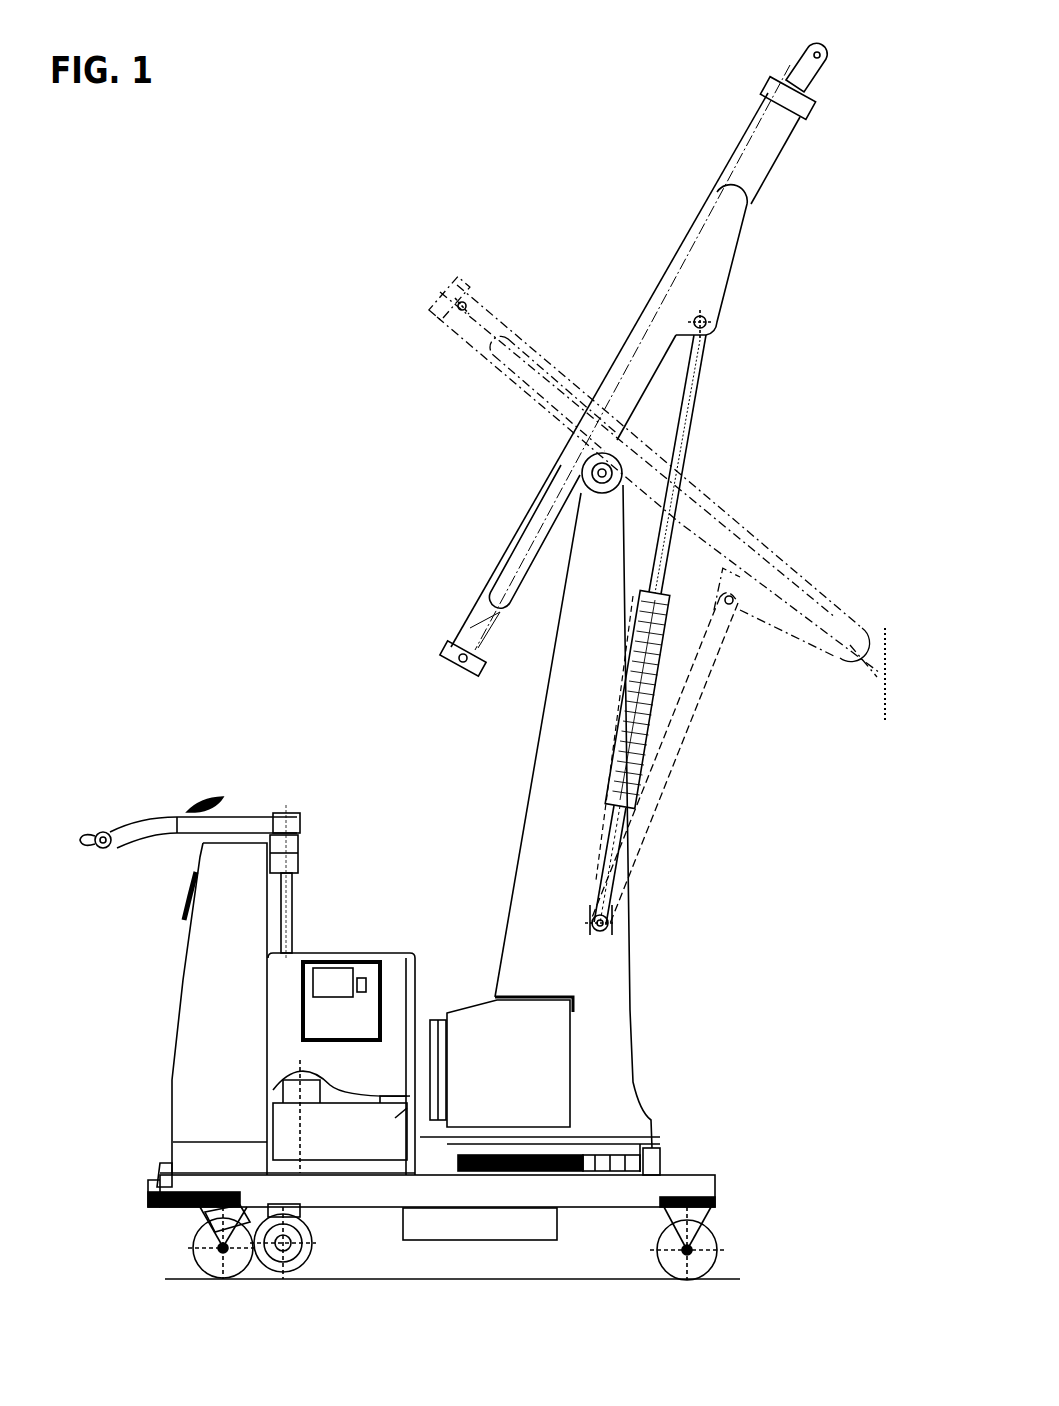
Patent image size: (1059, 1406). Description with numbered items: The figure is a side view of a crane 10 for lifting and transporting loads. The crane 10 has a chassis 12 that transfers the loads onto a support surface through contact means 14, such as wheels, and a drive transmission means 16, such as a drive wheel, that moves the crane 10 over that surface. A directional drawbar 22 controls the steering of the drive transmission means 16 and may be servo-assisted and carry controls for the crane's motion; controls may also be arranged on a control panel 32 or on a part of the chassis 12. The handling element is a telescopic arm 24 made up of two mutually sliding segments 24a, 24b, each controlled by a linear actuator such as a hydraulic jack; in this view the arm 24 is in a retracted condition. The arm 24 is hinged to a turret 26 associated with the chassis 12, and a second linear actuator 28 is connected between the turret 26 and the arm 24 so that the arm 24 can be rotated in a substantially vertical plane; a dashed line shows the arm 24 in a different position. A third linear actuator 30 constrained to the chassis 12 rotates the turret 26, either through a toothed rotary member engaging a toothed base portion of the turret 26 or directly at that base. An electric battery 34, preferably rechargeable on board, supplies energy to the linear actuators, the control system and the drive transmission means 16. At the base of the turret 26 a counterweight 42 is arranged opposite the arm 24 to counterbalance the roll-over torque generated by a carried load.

The crane 10 is at (260, 562).
The chassis 12 is at (693, 1163).
The contact means 14 is at (703, 1266).
The drive transmission means 16 is at (313, 1267).
The directional drawbar 22 is at (97, 812).
The arm 24 is at (716, 164).
The sliding segment 24a is at (690, 260).
The sliding segment 24b is at (790, 80).
The turret 26 is at (578, 866).
The second linear actuator 28 is at (706, 412).
The third linear actuator 30 is at (498, 1188).
The control panel 32 is at (163, 883).
The electric battery 34 is at (351, 1146).
The counterweight 42 is at (524, 1080).